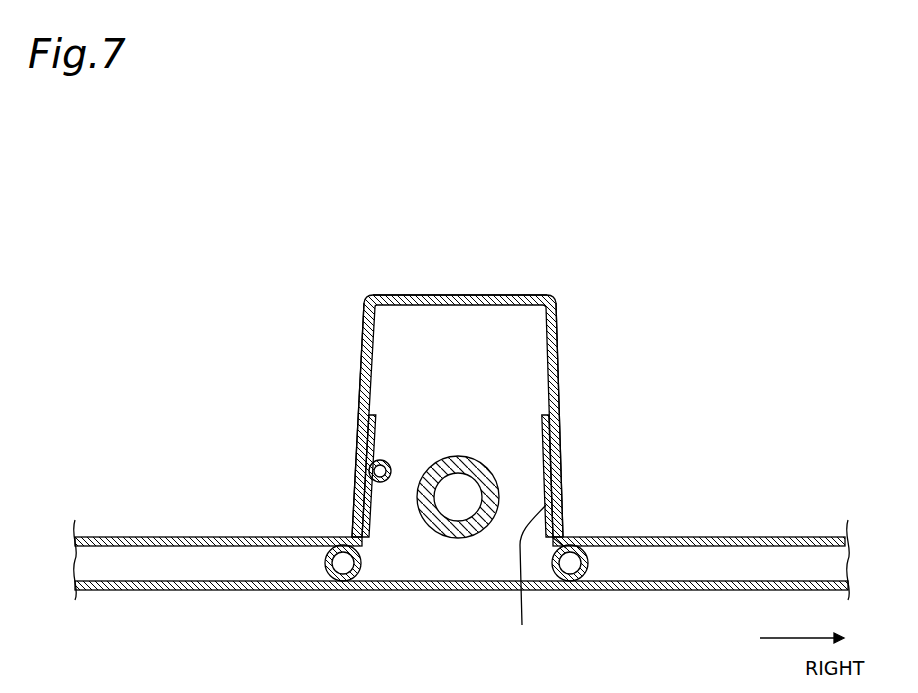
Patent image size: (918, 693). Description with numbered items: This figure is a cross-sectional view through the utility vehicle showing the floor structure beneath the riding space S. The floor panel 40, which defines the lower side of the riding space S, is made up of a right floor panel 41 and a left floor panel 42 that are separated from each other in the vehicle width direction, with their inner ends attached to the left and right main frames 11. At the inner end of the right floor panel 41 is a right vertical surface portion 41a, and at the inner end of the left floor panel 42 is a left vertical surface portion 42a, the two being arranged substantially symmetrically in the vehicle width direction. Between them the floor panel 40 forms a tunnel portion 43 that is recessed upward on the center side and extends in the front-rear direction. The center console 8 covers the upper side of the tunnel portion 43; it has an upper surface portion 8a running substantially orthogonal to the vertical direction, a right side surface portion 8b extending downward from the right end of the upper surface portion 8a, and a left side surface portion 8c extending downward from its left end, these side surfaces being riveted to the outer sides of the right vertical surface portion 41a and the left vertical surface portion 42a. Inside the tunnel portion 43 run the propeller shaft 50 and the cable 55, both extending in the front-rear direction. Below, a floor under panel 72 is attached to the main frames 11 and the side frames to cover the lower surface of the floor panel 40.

The center console 8 is at (466, 293).
The upper surface portion 8a is at (424, 293).
The right side surface portion 8b is at (562, 372).
The left side surface portion 8c is at (362, 372).
The floor panel 40 is at (735, 537).
The right floor panel 41 is at (683, 537).
The right vertical surface portion 41a is at (545, 445).
The left floor panel 42 is at (205, 537).
The left vertical surface portion 42a is at (376, 430).
The tunnel portion 43 is at (524, 577).
The propeller shaft 50 is at (458, 538).
The cable 55 is at (391, 465).
The floor under panel 72 is at (232, 592).
The main frame 11 is at (343, 592).
The riding space S is at (707, 388).